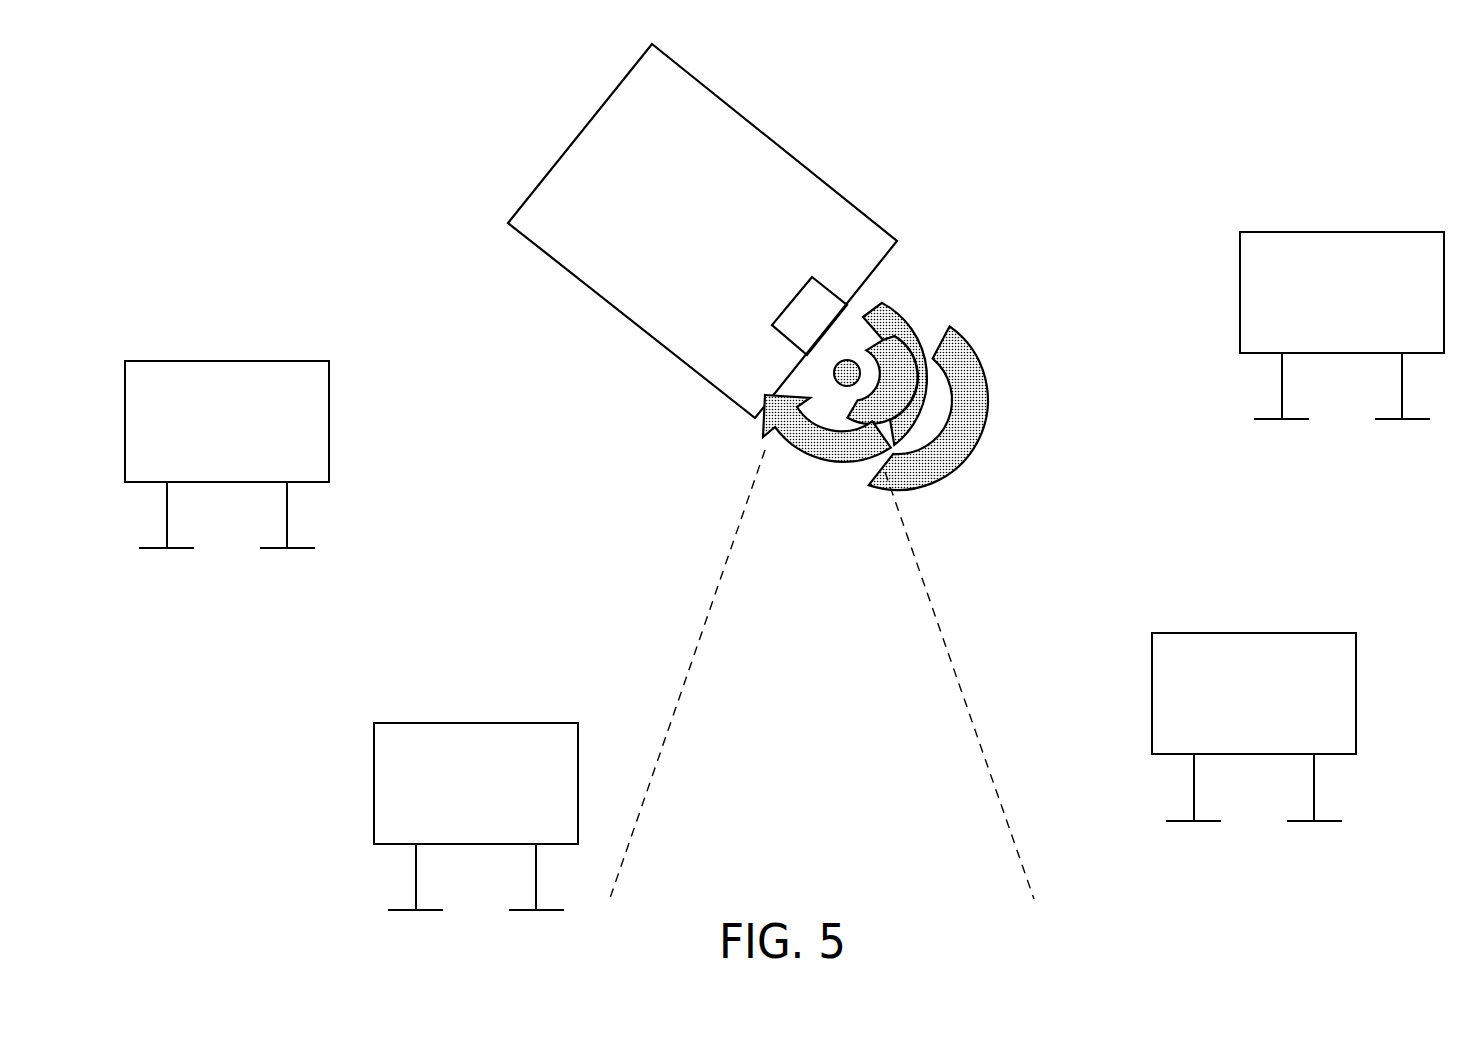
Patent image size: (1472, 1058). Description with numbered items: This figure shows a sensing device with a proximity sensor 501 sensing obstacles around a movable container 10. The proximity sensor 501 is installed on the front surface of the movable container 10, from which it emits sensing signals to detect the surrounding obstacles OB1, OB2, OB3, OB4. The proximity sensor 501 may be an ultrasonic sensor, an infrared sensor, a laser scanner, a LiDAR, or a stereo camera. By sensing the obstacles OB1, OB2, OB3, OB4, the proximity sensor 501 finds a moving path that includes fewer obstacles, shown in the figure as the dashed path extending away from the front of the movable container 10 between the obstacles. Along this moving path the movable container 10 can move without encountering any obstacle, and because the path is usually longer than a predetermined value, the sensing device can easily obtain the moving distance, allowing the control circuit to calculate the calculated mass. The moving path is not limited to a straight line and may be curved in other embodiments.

The movable container 10 is at (777, 139).
The proximity sensor 501 is at (788, 298).
The obstacle OB1 is at (1342, 232).
The obstacle OB2 is at (1255, 633).
The obstacle OB3 is at (476, 723).
The obstacle OB4 is at (227, 361).
The moving path is at (821, 675).